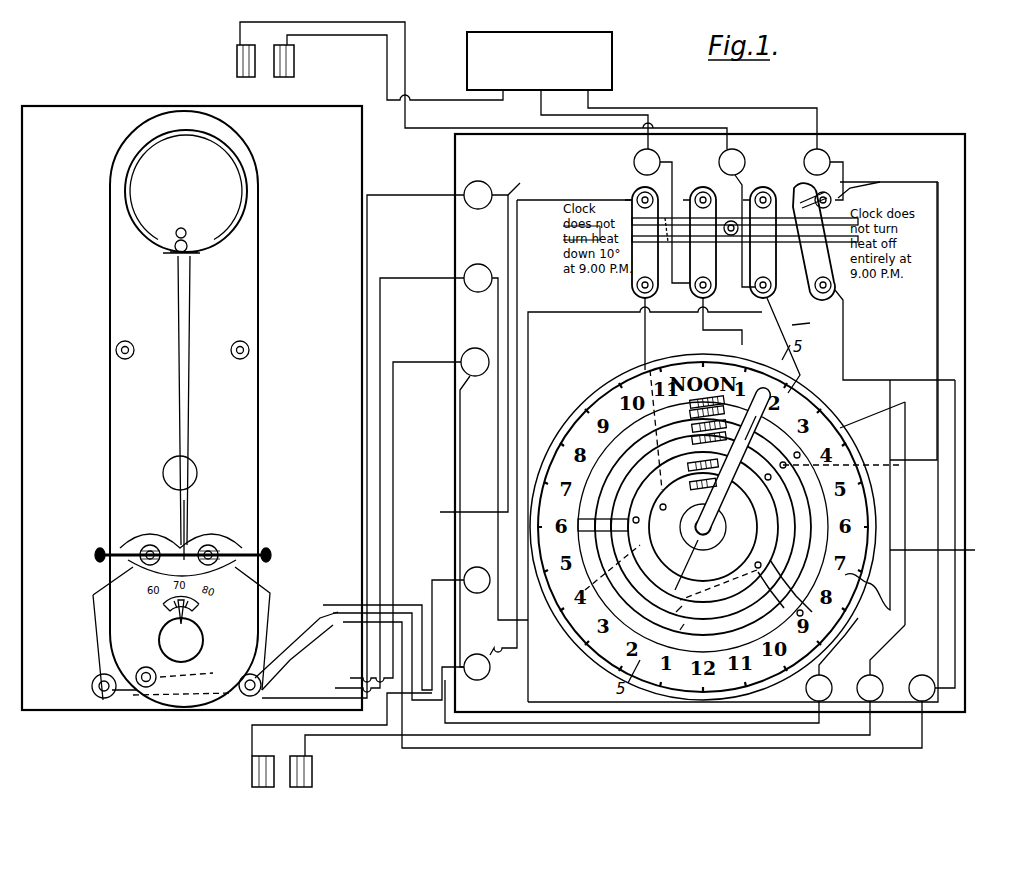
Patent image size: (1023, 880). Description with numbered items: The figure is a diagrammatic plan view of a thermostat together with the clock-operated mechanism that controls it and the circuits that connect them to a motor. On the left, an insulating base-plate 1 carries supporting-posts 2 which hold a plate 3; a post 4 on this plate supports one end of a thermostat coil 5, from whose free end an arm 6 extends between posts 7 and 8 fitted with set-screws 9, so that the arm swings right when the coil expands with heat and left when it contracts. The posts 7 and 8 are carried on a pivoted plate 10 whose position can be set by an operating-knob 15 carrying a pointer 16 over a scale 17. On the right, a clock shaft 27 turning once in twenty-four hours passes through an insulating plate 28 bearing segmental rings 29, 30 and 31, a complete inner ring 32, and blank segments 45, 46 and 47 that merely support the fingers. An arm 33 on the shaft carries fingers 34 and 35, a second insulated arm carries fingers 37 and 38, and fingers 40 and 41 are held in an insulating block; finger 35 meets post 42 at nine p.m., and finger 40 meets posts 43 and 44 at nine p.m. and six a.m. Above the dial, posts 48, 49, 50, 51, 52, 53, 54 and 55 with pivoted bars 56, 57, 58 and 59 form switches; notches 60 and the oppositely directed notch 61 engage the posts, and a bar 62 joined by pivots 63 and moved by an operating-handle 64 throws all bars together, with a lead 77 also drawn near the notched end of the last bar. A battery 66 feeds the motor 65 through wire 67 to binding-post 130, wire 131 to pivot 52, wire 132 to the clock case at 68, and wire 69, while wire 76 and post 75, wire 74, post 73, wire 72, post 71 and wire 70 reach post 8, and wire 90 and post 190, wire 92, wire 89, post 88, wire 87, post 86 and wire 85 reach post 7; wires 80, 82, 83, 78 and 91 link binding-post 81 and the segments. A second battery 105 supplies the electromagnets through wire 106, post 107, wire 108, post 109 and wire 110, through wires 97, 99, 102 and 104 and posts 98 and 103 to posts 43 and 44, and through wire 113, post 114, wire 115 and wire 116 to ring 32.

The base-plate 1 is at (192, 408).
The supporting-posts 2 is at (182, 514).
The plate 3 is at (194, 409).
The post 4 is at (189, 236).
The coil 5 is at (186, 191).
The arm 6 is at (173, 406).
The post 7 is at (150, 539).
The post 8 is at (210, 537).
The set-screws 9 is at (183, 538).
The plate 10 is at (181, 531).
The operating-knob 15 is at (167, 640).
The pointer 16 is at (202, 614).
The scale 17 is at (158, 605).
The shaft 27 is at (703, 530).
The plate 28 is at (676, 565).
The segmental ring 29 is at (703, 527).
The segmental ring 30 is at (695, 527).
The segmental ring 31 is at (694, 527).
The ring 32 is at (703, 527).
The arm 33 is at (733, 461).
The finger 34 is at (688, 372).
The finger 35 is at (706, 377).
The contact-finger 37 is at (693, 431).
The contact-finger 38 is at (693, 445).
The contact-finger 40 is at (689, 470).
The contact-finger 41 is at (684, 489).
The post 42 is at (800, 597).
The post 43 is at (767, 564).
The post 44 is at (645, 529).
The segmental ring 45 is at (672, 635).
The segmental ring 46 is at (668, 618).
The segmental ring 47 is at (708, 591).
The post 48 is at (632, 294).
The post 49 is at (639, 189).
The post 50 is at (695, 295).
The post 51 is at (706, 189).
The post 52 is at (755, 295).
The post 53 is at (765, 188).
The post 54 is at (876, 328).
The post 55 is at (830, 192).
The bar 56 is at (643, 242).
The bar 57 is at (704, 242).
The bar 58 is at (763, 242).
The bar 59 is at (814, 241).
The notch 60 is at (679, 192).
The notch 61 is at (835, 203).
The bar 62 is at (664, 242).
The pivots 63 is at (745, 228).
The operating-handle 64 is at (731, 245).
The motor 65 is at (539, 61).
The battery 66 is at (265, 72).
The wire 67 is at (483, 85).
The clock case connection 68 is at (794, 345).
The wire 69 is at (395, 67).
The wire 70 is at (270, 628).
The post 71 is at (272, 686).
The wire 72 is at (455, 693).
The post 73 is at (936, 556).
The wire 74 is at (725, 423).
The post 75 is at (832, 172).
The wire 76 is at (713, 117).
The conductor 77 is at (878, 181).
The wire 78 is at (943, 550).
The wire 80 is at (433, 678).
The binding-post 81 is at (881, 678).
The wire 82 is at (916, 514).
The wire 83 is at (938, 323).
The wire 85 is at (96, 633).
The post 86 is at (89, 687).
The wire 87 is at (632, 699).
The post 88 is at (832, 659).
The wire 89 is at (733, 456).
The wire 90 is at (624, 184).
The wire 91 is at (921, 512).
The wire 92 is at (731, 327).
The wire 97 is at (399, 522).
The post 98 is at (454, 357).
The wire 99 is at (500, 521).
The wire 102 is at (363, 451).
The post 103 is at (485, 185).
The wire 104 is at (521, 180).
The battery 105 is at (301, 775).
The wire 106 is at (587, 731).
The post 107 is at (471, 678).
The wire 108 is at (499, 449).
The post 109 is at (485, 268).
The wire 110 is at (391, 474).
The wire 113 is at (342, 724).
The post 114 is at (477, 570).
The wire 115 is at (523, 425).
The wire 116 is at (622, 334).
The binding-post 130 is at (755, 145).
The wire 131 is at (759, 213).
The wire 132 is at (815, 328).
The post 190 is at (629, 160).